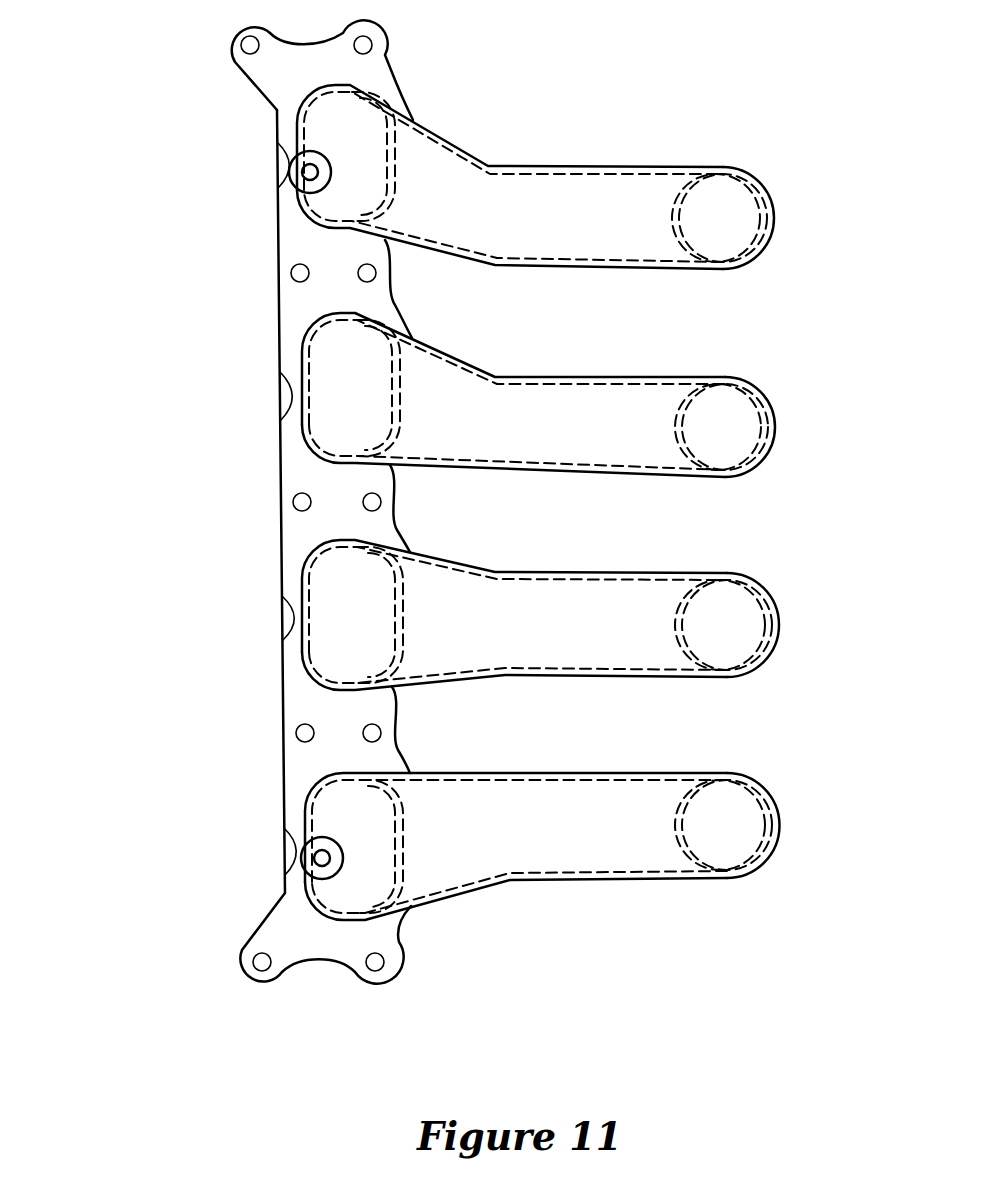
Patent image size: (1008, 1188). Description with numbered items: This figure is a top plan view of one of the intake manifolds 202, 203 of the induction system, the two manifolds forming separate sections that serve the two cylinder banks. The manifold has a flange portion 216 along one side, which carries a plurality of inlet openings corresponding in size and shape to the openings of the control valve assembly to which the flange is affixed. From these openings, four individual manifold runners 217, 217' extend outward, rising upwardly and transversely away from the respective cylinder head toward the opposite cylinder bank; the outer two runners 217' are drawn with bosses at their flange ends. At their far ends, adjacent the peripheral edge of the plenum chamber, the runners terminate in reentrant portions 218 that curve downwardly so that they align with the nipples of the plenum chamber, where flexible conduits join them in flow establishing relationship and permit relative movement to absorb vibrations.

The intake manifold 202 is at (471, 501).
The intake manifold 203 is at (511, 501).
The flange portion 216 is at (288, 300).
The manifold runner 217 is at (424, 501).
The manifold runner 217' is at (428, 502).
The reentrant portion 218 is at (773, 212).